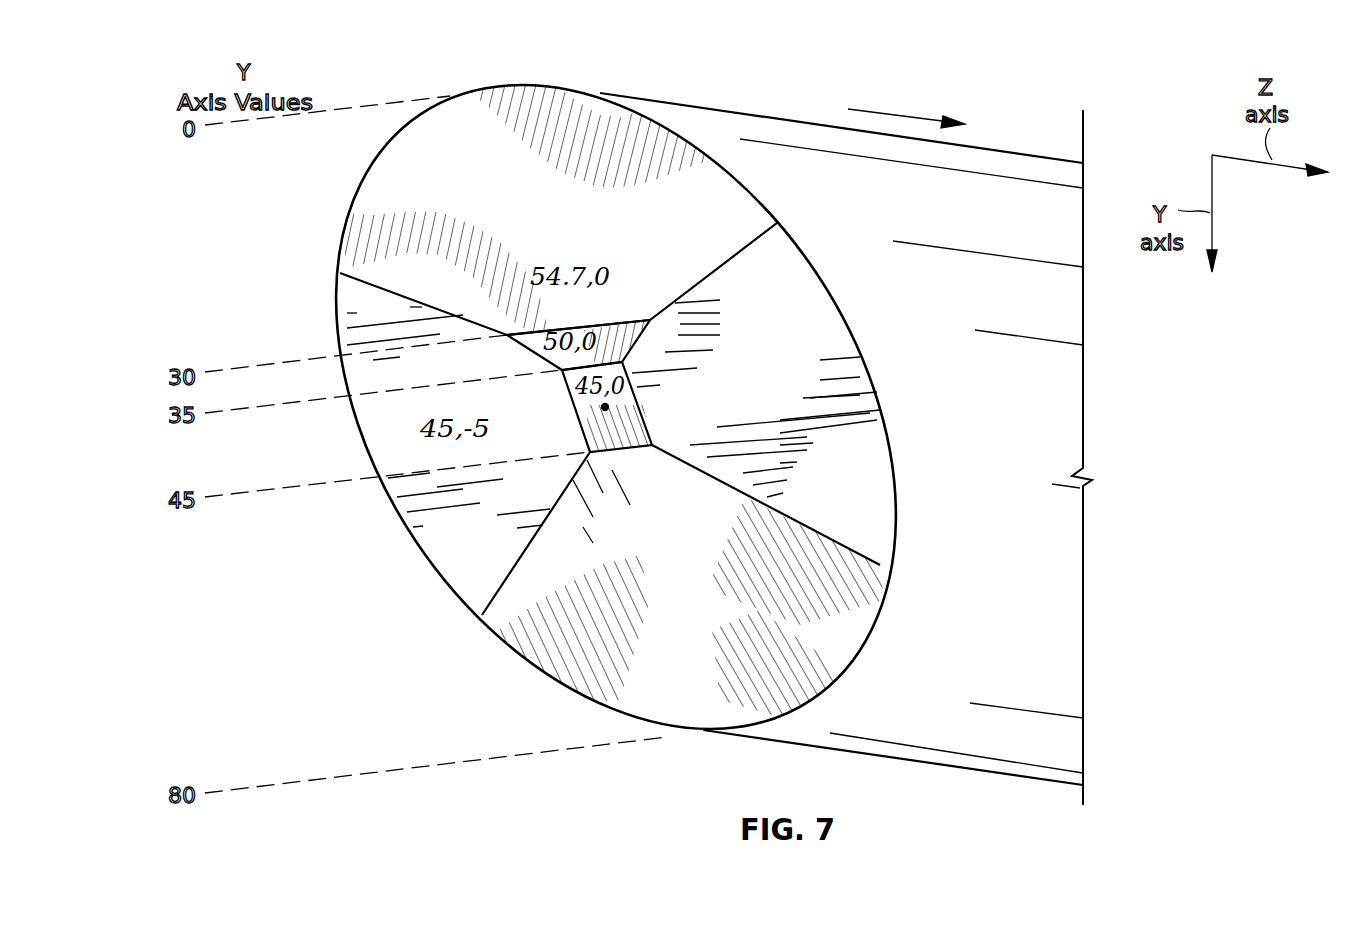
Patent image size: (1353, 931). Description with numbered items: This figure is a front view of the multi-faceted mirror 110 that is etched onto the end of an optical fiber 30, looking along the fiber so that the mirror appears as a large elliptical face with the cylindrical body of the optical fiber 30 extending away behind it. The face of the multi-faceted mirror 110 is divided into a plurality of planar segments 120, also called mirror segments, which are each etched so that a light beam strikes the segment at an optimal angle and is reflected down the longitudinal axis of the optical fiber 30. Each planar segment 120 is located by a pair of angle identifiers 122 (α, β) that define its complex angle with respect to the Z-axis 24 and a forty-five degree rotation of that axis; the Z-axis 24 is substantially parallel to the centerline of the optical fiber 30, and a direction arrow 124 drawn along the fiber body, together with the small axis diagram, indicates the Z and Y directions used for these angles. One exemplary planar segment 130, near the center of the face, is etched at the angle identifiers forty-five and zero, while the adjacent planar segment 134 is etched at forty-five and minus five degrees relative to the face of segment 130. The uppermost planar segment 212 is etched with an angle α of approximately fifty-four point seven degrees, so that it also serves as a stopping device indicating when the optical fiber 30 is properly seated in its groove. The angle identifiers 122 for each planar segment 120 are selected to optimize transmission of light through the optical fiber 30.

The multi-faceted mirror 110 is at (330, 214).
The planar segments 120 is at (470, 118).
The angle identifiers 122 is at (777, 377).
The direction arrow 124 is at (908, 114).
The planar segment 130 is at (578, 403).
The planar segment 134 is at (387, 433).
The Z-axis 24 is at (605, 407).
The planar segment 212 is at (573, 110).
The optical fiber 30 is at (990, 413).